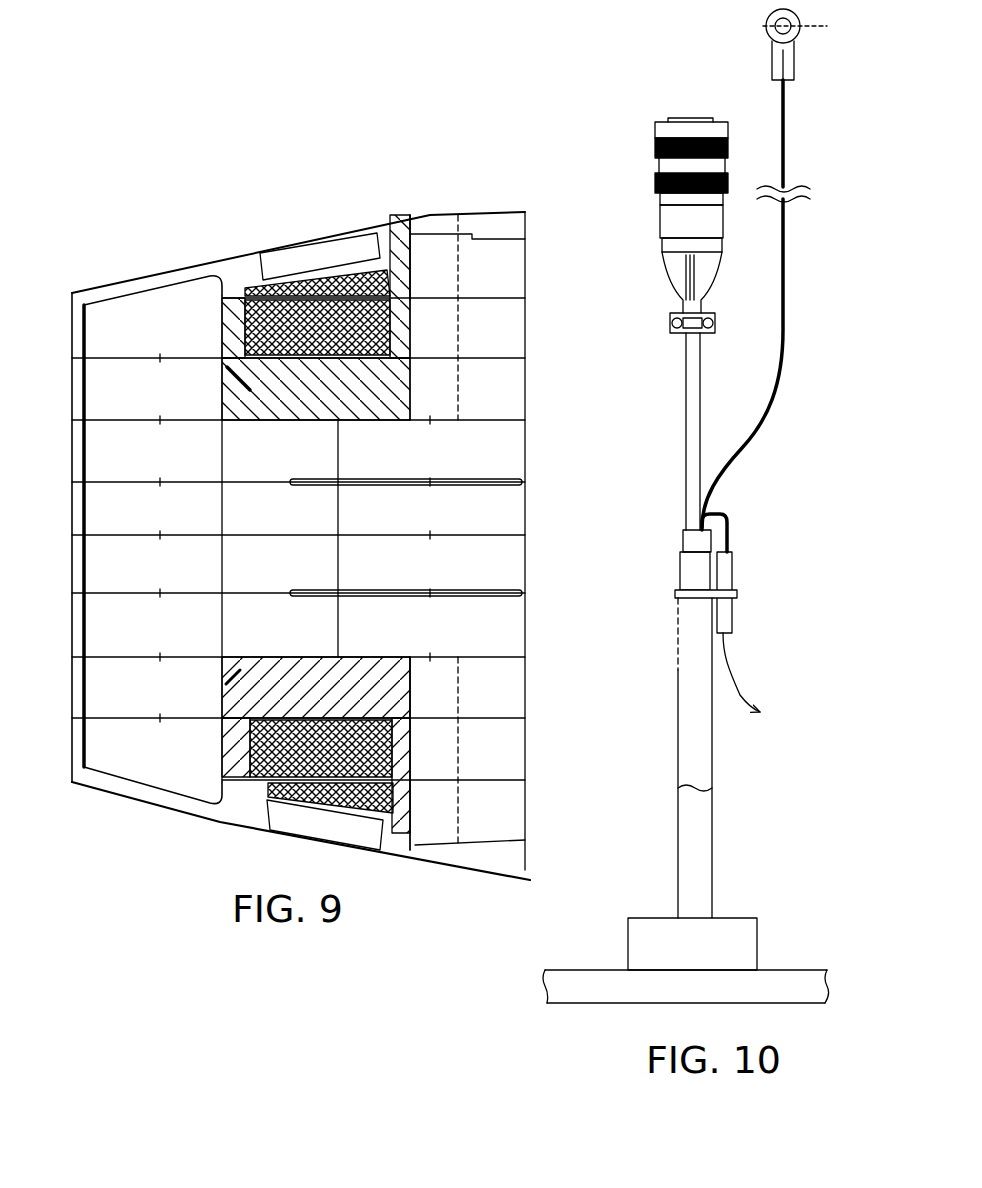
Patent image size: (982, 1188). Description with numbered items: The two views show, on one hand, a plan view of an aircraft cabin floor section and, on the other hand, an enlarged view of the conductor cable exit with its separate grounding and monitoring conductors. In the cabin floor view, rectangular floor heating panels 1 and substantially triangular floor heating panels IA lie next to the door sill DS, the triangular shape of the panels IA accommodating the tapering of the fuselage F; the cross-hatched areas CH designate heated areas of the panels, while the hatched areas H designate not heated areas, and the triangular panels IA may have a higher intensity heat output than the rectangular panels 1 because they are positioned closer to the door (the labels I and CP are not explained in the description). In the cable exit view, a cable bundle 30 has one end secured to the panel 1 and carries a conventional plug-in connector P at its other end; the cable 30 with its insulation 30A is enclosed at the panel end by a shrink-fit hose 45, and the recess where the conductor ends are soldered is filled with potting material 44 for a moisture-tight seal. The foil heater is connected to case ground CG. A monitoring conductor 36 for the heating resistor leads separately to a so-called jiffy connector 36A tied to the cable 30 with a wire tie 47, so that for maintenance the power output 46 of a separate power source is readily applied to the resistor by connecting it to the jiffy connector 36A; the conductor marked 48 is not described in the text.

In FIG. 9, the fuselage F is at (170, 280).
In FIG. 9, the door sill DS is at (308, 253).
In FIG. 9, the cross-hatched areas CH is at (380, 277).
In FIG. 9, the floor heating panel IA is at (428, 266).
In FIG. 9, the hatched areas H is at (247, 292).
In FIG. 9, the insulation I is at (218, 382).
In FIG. 9, the composite panel CP is at (507, 450).
In FIG. 10, the plug-in connector P is at (667, 132).
In FIG. 10, the case ground CG is at (813, 44).
In FIG. 10, the cable bundle 30 is at (658, 477).
In FIG. 10, the ground cable 48 is at (763, 427).
In FIG. 10, the monitoring conductor 36 is at (728, 527).
In FIG. 10, the insulation 30A is at (683, 536).
In FIG. 10, the wire tie 47 is at (676, 597).
In FIG. 10, the jiffy connector 36A is at (730, 608).
In FIG. 10, the shrink-fit hose 45 is at (687, 682).
In FIG. 10, the potting material 44 is at (748, 937).
In FIG. 10, the floor heating panel 1 is at (607, 990).
In FIG. 10, the power output 46 is at (776, 679).